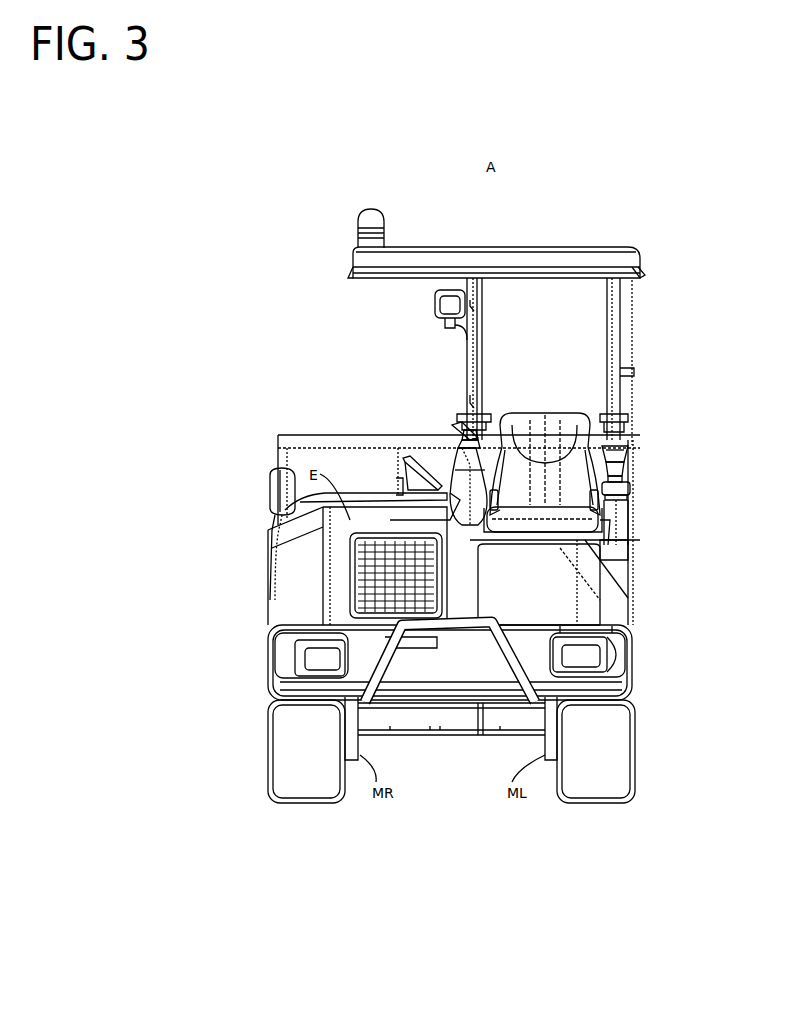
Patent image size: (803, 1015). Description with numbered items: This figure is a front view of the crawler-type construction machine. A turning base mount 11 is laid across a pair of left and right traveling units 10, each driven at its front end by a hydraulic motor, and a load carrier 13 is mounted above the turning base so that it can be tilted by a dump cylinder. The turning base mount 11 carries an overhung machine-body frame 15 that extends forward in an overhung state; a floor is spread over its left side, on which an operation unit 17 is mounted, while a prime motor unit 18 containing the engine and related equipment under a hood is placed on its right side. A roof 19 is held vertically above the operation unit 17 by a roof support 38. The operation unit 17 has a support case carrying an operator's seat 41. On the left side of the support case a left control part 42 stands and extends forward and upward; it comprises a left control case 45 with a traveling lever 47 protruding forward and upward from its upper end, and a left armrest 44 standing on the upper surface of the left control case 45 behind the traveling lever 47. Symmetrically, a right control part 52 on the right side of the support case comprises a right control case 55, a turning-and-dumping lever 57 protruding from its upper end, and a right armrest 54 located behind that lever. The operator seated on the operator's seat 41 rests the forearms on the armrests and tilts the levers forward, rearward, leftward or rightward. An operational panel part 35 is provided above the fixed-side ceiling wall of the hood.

The traveling unit 10 is at (303, 812).
The turning base mount 11 is at (430, 735).
The load carrier 13 is at (391, 426).
The overhung machine-body frame 15 is at (634, 666).
The operation unit 17 is at (540, 408).
The prime motor unit 18 is at (265, 602).
The roof 19 is at (516, 248).
The operational panel part 35 is at (393, 466).
The roof support 38 is at (470, 356).
The operator's seat 41 is at (548, 435).
The left control part 42 is at (636, 490).
The left armrest 44 is at (620, 450).
The left control case 45 is at (634, 508).
The traveling lever 47 is at (622, 468).
The right control part 52 is at (440, 470).
The right armrest 54 is at (454, 424).
The right control case 55 is at (476, 540).
The turning-and-dumping lever 57 is at (462, 468).